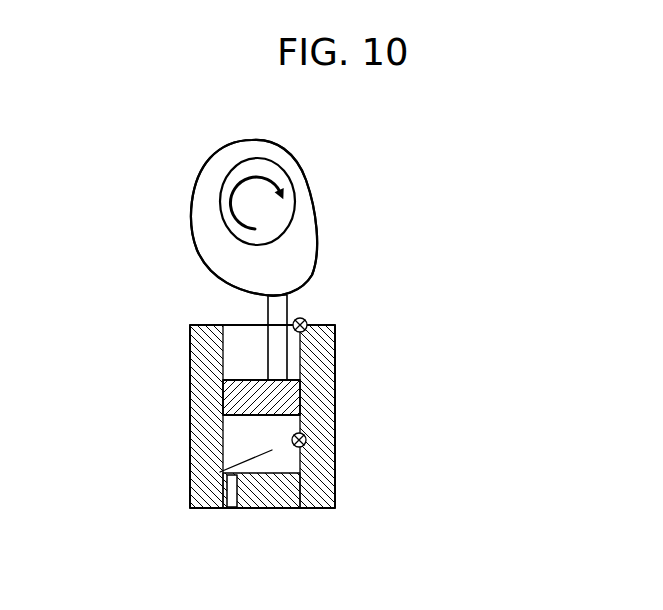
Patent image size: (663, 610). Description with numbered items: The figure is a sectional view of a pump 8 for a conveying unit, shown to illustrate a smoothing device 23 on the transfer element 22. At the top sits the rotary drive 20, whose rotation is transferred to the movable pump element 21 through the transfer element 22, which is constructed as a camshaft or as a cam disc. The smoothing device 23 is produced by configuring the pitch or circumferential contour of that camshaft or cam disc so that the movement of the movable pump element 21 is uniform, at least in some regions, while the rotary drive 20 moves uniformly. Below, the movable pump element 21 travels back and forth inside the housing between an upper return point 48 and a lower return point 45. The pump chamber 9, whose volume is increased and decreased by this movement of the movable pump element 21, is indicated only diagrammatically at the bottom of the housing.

The pump 8 is at (172, 112).
The pump chamber 9 is at (240, 422).
The rotary drive 20 is at (293, 204).
The movable pump element 21 is at (227, 460).
The transfer element 22 is at (192, 219).
The smoothing device 23 is at (318, 245).
The lower return point 45 is at (298, 443).
The upper return point 48 is at (308, 317).